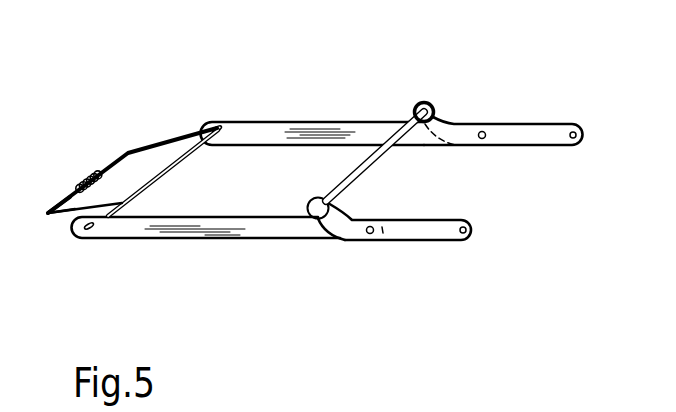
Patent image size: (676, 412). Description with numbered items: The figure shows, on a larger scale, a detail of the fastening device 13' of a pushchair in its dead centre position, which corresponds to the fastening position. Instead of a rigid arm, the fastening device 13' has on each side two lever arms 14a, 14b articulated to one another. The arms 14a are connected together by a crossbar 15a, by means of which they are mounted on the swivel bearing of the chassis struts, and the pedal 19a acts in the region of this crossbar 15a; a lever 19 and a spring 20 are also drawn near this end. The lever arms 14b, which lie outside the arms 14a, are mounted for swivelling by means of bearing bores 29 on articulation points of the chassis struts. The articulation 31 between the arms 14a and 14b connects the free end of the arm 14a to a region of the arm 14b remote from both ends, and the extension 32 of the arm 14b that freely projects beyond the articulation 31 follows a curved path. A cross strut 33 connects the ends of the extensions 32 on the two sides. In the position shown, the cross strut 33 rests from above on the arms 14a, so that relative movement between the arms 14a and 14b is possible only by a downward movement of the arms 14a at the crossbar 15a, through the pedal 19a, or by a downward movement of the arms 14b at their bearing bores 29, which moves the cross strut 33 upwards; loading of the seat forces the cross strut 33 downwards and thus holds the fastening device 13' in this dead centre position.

The fastening device 13' is at (325, 204).
The lever arm 14a is at (320, 122).
The lever arm 14b is at (533, 130).
The crossbar 15a is at (177, 168).
The locking lever 19 is at (145, 148).
The pedal 19a is at (55, 205).
The spring 20 is at (82, 175).
The bearing bore 29 is at (585, 137).
The articulation 31 is at (372, 234).
The extension 32 is at (337, 223).
The cross strut 33 is at (378, 150).